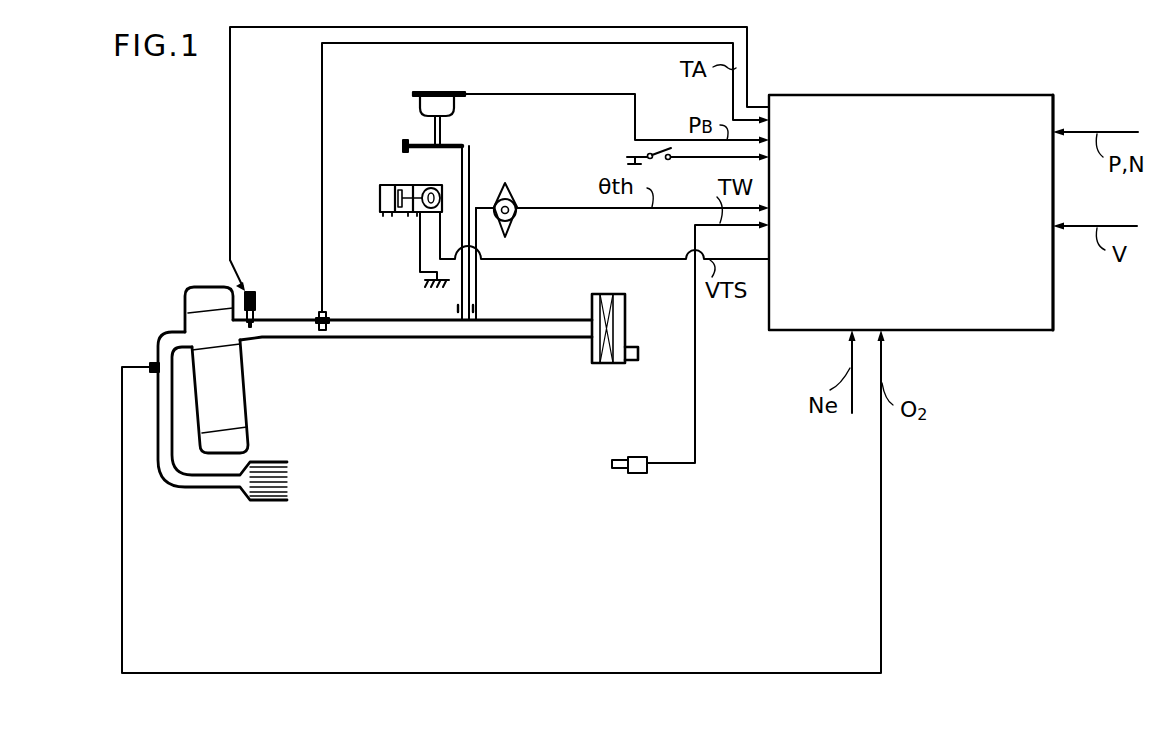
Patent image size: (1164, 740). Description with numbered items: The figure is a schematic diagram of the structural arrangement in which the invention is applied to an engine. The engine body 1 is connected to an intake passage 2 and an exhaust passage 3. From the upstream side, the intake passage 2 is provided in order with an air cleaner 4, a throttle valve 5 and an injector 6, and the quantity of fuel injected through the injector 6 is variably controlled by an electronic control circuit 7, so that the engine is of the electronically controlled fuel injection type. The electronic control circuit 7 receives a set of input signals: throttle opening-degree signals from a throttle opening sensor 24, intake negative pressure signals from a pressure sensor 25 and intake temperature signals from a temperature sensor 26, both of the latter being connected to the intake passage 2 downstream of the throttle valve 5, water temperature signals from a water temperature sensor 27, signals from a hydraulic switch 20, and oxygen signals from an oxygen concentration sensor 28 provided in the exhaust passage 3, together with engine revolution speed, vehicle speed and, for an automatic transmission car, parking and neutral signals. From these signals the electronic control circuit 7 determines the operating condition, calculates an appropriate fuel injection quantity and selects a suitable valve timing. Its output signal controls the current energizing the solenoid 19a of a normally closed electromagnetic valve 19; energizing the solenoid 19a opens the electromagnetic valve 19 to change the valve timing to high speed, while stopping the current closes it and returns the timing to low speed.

The engine body 1 is at (182, 281).
The intake passage 2 is at (408, 338).
The exhaust passage 3 is at (205, 487).
The air cleaner 4 is at (592, 363).
The throttle valve 5 is at (473, 322).
The injector 6 is at (256, 308).
The electronic control circuit 7 is at (903, 228).
The electromagnetic valve 19 is at (383, 185).
The solenoid 19a is at (442, 192).
The hydraulic switch 20 is at (658, 147).
The throttle opening sensor 24 is at (519, 172).
The pressure sensor 25 is at (452, 92).
The temperature sensor 26 is at (326, 312).
The water temperature sensor 27 is at (618, 457).
The oxygen concentration sensor 28 is at (152, 363).